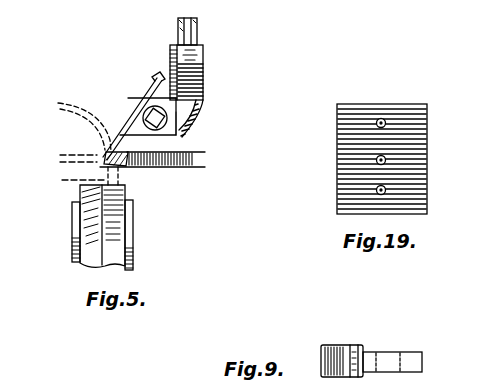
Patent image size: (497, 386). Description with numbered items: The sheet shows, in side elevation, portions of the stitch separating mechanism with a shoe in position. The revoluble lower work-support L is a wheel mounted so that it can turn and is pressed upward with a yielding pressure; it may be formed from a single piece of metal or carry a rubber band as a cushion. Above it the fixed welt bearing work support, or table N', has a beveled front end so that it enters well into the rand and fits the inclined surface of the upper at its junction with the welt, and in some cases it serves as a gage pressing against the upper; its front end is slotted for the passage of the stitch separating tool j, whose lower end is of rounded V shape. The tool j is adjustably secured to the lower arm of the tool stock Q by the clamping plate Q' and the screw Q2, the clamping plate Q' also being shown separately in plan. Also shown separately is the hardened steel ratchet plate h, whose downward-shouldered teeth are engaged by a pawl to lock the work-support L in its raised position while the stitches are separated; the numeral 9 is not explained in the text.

In FIG. 5, the tool stock Q is at (193, 77).
In FIG. 5, the screw Q2 is at (139, 119).
In FIG. 5, the clamping plate Q' is at (193, 131).
In FIG. 9, the clamping plate Q' is at (371, 356).
In FIG. 5, the stitch separating tool j is at (120, 130).
In FIG. 5, the table N' is at (152, 170).
In FIG. 5, the lower work-support L is at (80, 226).
In FIG. 5, the cylinder inner part 9 is at (122, 235).
In FIG. 19, the ratchet plate h is at (389, 159).